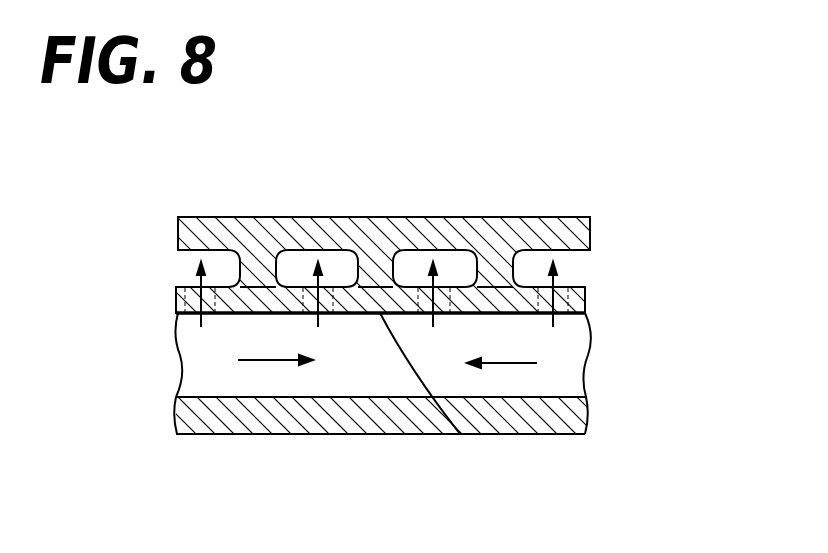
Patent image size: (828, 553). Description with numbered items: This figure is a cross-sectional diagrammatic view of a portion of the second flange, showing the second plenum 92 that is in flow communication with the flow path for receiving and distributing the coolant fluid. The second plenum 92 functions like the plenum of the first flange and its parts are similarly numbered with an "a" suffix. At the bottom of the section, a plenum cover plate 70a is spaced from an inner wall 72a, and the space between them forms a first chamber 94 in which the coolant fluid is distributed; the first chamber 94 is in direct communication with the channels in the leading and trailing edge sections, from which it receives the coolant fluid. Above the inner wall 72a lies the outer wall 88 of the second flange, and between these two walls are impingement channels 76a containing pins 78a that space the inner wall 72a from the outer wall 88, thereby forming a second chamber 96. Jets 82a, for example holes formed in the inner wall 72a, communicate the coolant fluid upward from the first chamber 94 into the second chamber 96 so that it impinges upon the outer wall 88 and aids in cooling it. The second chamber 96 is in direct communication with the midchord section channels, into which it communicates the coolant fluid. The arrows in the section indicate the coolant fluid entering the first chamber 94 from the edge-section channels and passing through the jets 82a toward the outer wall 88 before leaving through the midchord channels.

The outer wall 88 is at (412, 217).
The second chamber 96 is at (293, 262).
The impingement channel 76a is at (442, 252).
The pin 78a is at (495, 265).
The jet 82a is at (597, 295).
The second plenum 92 is at (625, 345).
The first chamber 94 is at (567, 362).
The plenum cover plate 70a is at (347, 434).
The inner wall 72a is at (460, 434).